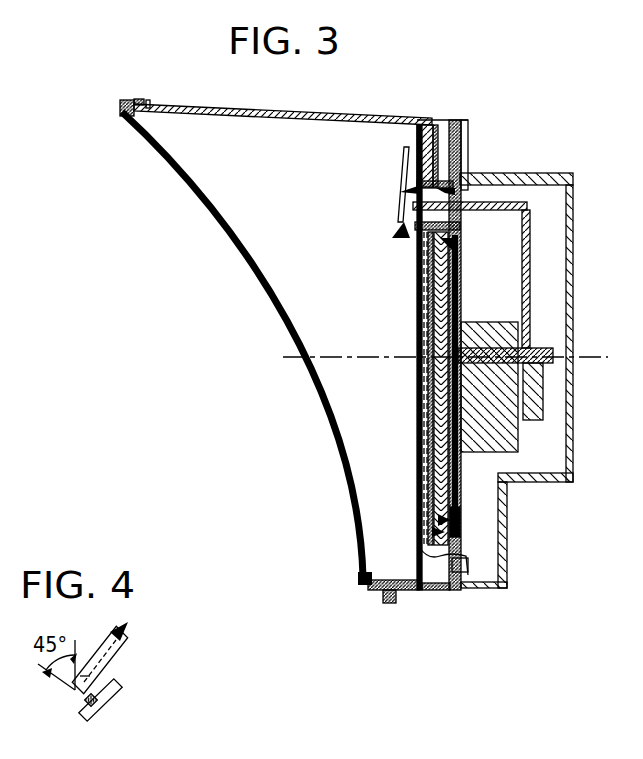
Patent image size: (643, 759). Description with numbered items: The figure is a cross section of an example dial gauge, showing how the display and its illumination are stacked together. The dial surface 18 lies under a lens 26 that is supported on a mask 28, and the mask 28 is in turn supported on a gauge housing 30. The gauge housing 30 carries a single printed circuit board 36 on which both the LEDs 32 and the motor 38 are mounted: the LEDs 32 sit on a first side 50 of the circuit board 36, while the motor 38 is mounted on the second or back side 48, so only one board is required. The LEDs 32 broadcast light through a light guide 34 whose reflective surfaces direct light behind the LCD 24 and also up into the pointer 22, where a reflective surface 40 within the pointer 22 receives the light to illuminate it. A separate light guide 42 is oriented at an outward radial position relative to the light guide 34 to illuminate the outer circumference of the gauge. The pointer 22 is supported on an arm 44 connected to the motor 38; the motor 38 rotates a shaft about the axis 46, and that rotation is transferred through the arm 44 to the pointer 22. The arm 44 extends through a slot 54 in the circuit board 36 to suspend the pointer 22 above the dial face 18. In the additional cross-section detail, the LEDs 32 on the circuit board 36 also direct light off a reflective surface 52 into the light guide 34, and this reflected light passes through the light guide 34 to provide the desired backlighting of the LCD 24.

In FIG. 3, the dial surface 18 is at (418, 558).
In FIG. 3, the pointer 22 is at (411, 180).
In FIG. 3, the LCD 24 is at (417, 356).
In FIG. 3, the lens 26 is at (125, 104).
In FIG. 3, the mask 28 is at (293, 117).
In FIG. 3, the gauge housing 30 is at (445, 122).
In FIG. 3, the LEDs 32 is at (455, 252).
In FIG. 4, the LEDs 32 is at (84, 702).
In FIG. 3, the light guide 34 is at (461, 518).
In FIG. 4, the light guide 34 is at (94, 640).
In FIG. 3, the printed circuit board 36 is at (461, 486).
In FIG. 4, the printed circuit board 36 is at (121, 694).
In FIG. 3, the motor 38 is at (503, 443).
In FIG. 3, the reflective surface 40 is at (462, 226).
In FIG. 3, the separate light guide 42 is at (413, 190).
In FIG. 3, the arm 44 is at (533, 206).
In FIG. 3, the axis 46 is at (592, 350).
In FIG. 3, the second or back side 48 is at (450, 303).
In FIG. 3, the first side 50 is at (437, 462).
In FIG. 4, the reflective surface 52 is at (90, 676).
In FIG. 3, the slot 54 is at (403, 185).